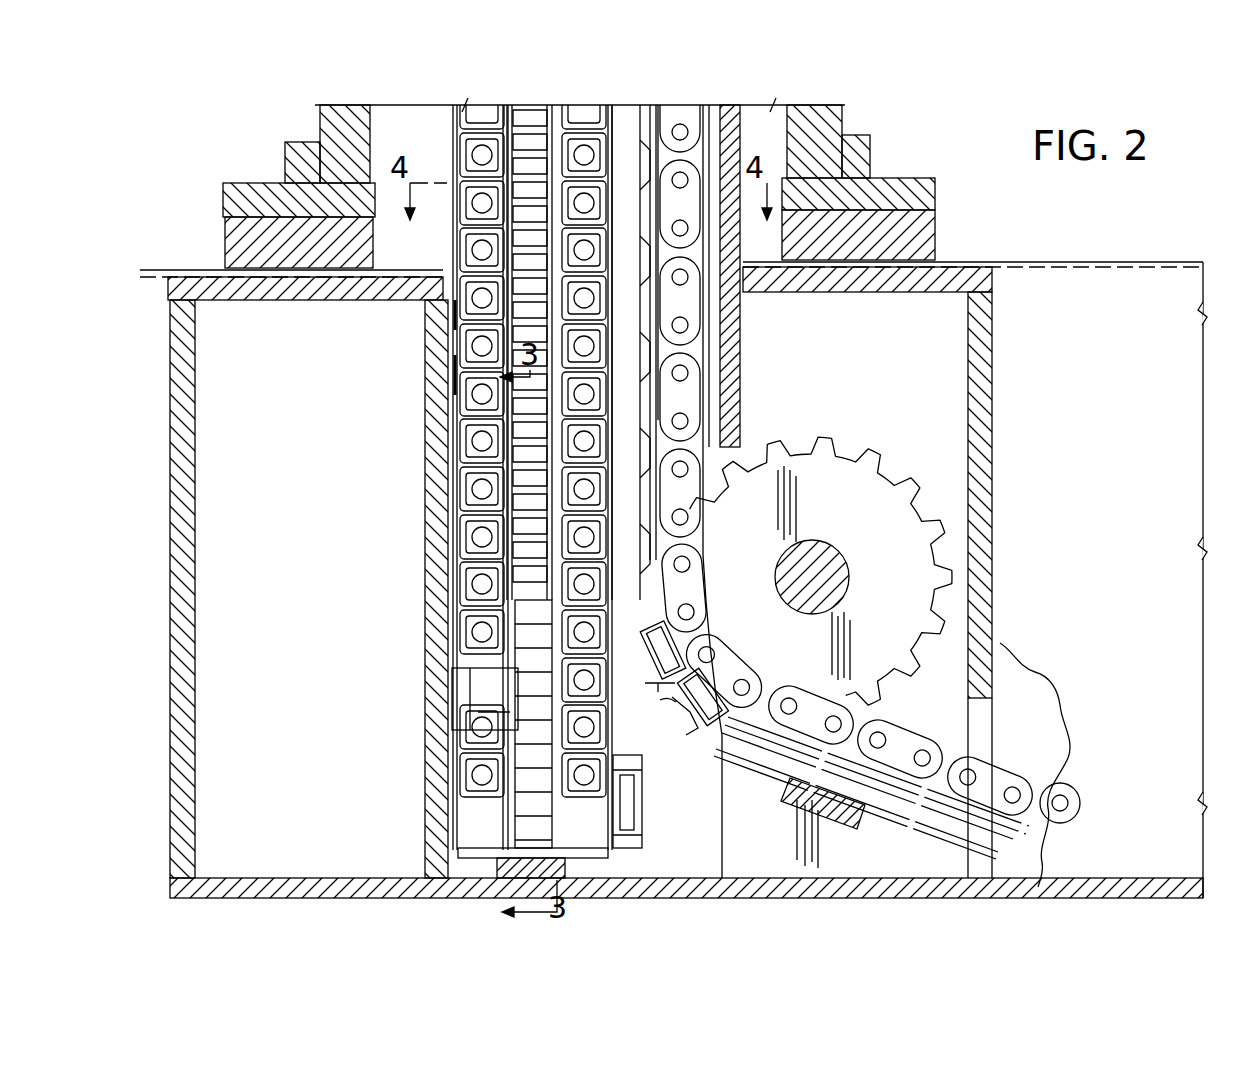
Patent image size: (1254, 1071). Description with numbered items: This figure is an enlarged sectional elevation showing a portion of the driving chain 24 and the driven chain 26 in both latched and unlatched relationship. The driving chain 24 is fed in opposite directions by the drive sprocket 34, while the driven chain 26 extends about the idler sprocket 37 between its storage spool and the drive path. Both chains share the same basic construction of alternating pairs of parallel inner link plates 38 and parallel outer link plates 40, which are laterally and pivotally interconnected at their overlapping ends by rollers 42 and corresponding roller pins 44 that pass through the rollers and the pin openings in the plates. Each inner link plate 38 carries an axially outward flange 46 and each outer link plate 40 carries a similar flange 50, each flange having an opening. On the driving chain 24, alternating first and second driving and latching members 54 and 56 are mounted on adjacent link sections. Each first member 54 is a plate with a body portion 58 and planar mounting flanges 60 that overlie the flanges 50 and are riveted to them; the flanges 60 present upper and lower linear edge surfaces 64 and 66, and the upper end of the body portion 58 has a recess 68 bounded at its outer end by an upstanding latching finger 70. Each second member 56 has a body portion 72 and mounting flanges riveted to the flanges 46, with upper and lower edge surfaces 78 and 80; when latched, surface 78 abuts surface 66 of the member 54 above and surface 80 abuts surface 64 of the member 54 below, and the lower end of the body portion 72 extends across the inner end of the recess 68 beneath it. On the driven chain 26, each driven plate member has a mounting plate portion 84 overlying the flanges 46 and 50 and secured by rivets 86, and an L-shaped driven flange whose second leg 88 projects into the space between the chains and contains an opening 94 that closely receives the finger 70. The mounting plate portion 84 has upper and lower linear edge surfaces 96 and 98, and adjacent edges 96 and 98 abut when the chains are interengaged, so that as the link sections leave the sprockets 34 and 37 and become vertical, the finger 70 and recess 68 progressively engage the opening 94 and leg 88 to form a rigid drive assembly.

The driving chain 24 is at (705, 307).
The driven chain 26 is at (440, 253).
The drive sprocket 34 is at (876, 494).
The idler sprocket 37 is at (527, 745).
The inner link plates 38 is at (470, 600).
The outer link plates 40 is at (468, 570).
The rollers 42 is at (523, 462).
The roller pins 44 is at (688, 412).
The flange 46 is at (468, 388).
The flange 50 is at (465, 338).
The first driving and latching member 54 is at (685, 752).
The second driving and latching member 56 is at (676, 630).
The body portion 58 is at (735, 668).
The planar mounting flanges 60 is at (772, 700).
The upper linear edge surface 64 is at (690, 713).
The lower linear edge surface 66 is at (723, 735).
The recess 68 is at (673, 702).
The latching finger 70 is at (690, 728).
The body portion 72 is at (703, 528).
The upper linear edge surface 78 is at (662, 617).
The lower linear edge surface 80 is at (675, 685).
The mounting plate portion 84 is at (460, 372).
The rivets 86 is at (502, 642).
The second leg 88 is at (638, 812).
The opening 94 is at (634, 832).
The upper linear edge surface 96 is at (467, 303).
The lower linear edge surface 98 is at (463, 440).